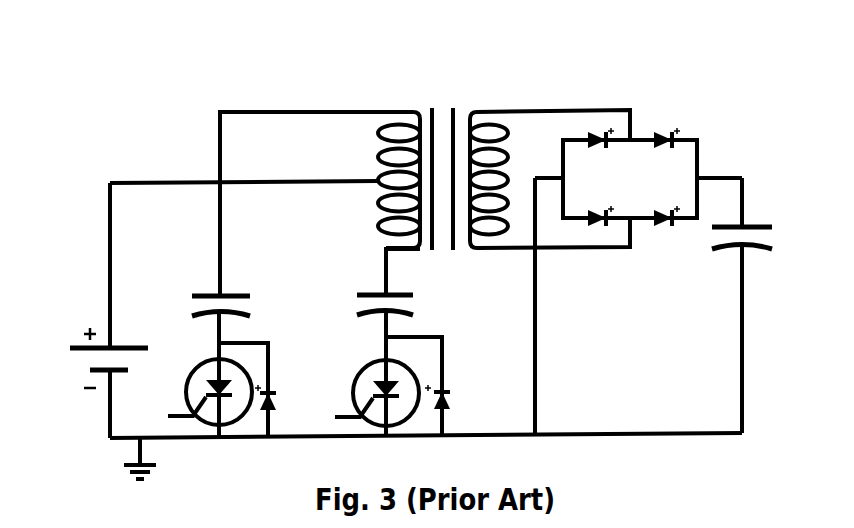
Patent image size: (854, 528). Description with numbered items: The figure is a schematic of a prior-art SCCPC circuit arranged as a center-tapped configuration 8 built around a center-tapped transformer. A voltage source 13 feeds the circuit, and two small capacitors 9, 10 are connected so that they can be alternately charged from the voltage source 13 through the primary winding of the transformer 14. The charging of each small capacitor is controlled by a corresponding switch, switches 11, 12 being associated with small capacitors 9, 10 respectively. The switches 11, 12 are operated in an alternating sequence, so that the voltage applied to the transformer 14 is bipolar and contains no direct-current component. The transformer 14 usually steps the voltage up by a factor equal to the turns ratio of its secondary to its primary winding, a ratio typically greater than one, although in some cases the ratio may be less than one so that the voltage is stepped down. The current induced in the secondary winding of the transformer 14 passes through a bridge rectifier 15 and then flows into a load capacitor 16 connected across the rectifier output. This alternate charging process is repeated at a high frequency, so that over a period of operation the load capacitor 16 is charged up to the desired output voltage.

The center-tapped configuration 8 is at (183, 100).
The small capacitor 9 is at (205, 285).
The small capacitor 10 is at (362, 288).
The switch 11 is at (203, 350).
The switch 12 is at (372, 358).
The voltage source 13 is at (75, 338).
The transformer 14 is at (444, 103).
The bridge rectifier 15 is at (638, 281).
The load capacitor 16 is at (727, 255).